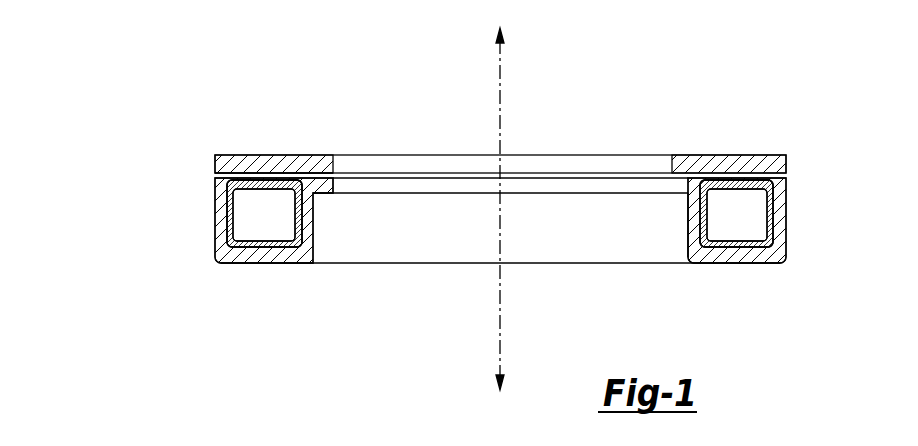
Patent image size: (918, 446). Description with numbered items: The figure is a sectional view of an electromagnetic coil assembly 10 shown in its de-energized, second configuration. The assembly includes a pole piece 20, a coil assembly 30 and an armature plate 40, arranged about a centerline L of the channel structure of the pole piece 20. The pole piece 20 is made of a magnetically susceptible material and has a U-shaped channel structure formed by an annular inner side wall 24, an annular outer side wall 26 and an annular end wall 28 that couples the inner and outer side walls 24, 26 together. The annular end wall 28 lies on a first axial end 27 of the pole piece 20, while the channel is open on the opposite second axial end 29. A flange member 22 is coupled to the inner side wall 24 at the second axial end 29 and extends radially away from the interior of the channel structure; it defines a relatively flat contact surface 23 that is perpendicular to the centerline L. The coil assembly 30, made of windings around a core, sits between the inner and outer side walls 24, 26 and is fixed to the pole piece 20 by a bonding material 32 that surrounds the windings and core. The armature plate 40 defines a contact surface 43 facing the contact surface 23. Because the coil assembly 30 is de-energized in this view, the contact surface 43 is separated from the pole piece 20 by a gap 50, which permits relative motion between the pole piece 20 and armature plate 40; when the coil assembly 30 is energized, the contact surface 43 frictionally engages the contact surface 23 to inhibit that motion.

The electromagnetic coil assembly 10 is at (476, 209).
The pole piece 20 is at (517, 204).
The flange member 22 is at (321, 196).
The contact surface 23 is at (313, 173).
The annular inner side wall 24 is at (688, 223).
The annular outer side wall 26 is at (748, 189).
The first axial end 27 is at (244, 253).
The annular end wall 28 is at (720, 264).
The second axial end 29 is at (209, 172).
The coil assembly 30 is at (752, 207).
The bonding material 32 is at (722, 181).
The armature plate 40 is at (739, 154).
The contact surface 43 is at (229, 184).
The gap 50 is at (212, 178).
The centerline L is at (502, 210).